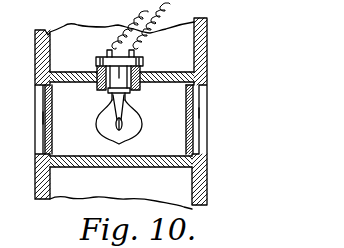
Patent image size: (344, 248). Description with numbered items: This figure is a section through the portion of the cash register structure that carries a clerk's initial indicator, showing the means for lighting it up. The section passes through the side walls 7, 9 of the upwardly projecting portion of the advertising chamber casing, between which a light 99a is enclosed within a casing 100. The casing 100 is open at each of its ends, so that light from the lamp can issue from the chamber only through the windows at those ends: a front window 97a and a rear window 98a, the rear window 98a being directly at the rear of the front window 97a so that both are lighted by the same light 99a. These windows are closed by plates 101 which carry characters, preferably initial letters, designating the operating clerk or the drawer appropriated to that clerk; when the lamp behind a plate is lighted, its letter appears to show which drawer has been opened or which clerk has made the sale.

The side wall 7 is at (35, 59).
The side wall 9 is at (209, 50).
The casing 100 is at (156, 74).
The plates 101 is at (52, 113).
The front window 97a is at (45, 118).
The rear window 98a is at (200, 113).
The light 99a is at (133, 118).